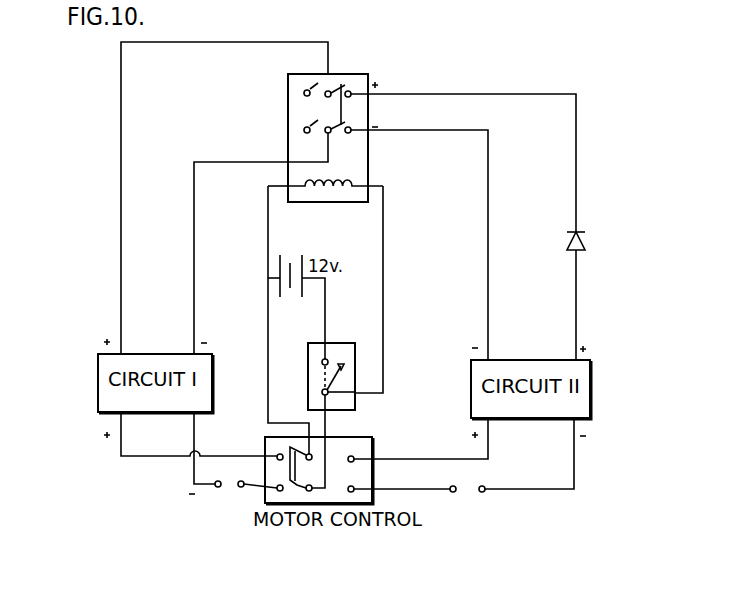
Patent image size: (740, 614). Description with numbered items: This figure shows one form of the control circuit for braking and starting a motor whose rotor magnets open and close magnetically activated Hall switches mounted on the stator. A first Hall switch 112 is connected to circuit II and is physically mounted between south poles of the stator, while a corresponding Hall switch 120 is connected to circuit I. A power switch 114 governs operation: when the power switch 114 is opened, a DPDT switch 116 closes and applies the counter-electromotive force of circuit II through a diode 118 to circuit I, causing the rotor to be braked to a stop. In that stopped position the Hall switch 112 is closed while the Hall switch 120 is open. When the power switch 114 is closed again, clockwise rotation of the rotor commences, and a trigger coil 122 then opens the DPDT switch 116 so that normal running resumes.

The first Hall switch 112 is at (463, 486).
The power switch 114 is at (328, 343).
The DPDT switch 116 is at (288, 135).
The diode 118 is at (585, 240).
The Hall switch 120 is at (228, 479).
The trigger coil 122 is at (305, 192).